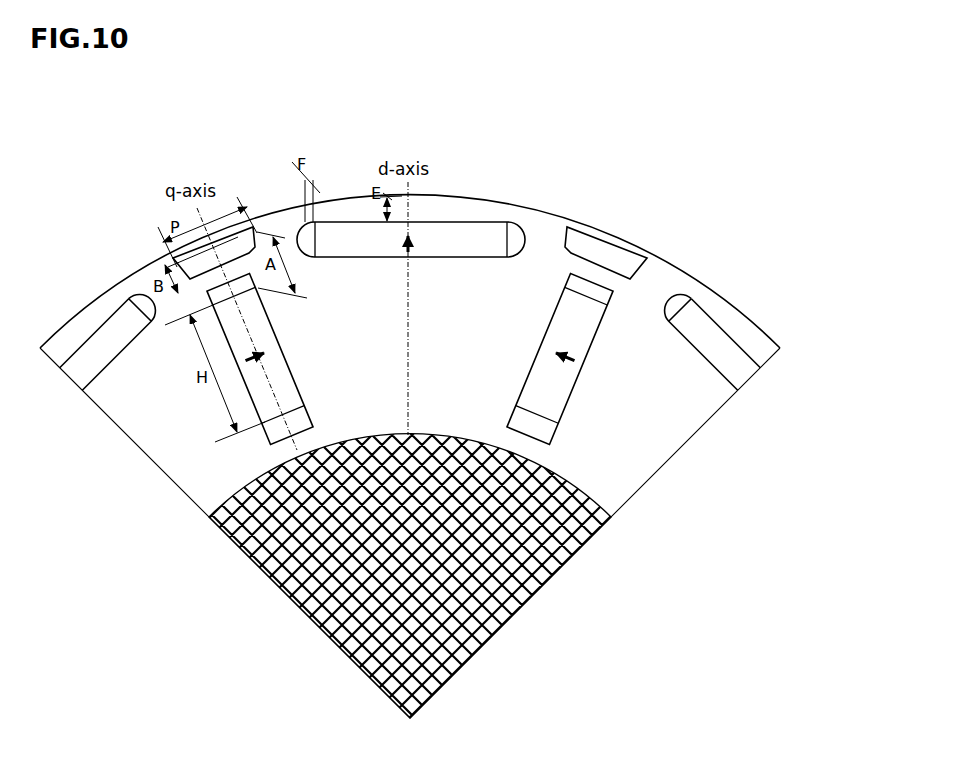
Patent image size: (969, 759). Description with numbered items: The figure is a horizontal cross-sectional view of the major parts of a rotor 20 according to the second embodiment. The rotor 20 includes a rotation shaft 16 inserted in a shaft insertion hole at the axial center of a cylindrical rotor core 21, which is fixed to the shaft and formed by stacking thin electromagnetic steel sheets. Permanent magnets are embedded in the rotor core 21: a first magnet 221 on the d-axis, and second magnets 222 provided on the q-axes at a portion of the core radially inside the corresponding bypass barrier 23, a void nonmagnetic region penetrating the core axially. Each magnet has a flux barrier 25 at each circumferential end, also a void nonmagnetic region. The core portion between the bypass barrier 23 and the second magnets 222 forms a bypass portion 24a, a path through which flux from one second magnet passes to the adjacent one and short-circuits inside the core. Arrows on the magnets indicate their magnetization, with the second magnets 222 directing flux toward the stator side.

The rotor 20 is at (110, 177).
The rotation shaft 16 is at (432, 575).
The first magnet 221 is at (290, 275).
The second magnet 222 is at (452, 308).
The bypass barrier 23 is at (410, 220).
The bypass portion 24a is at (434, 292).
The rotor core 21 is at (727, 305).
The flux barrier 25 is at (725, 296).